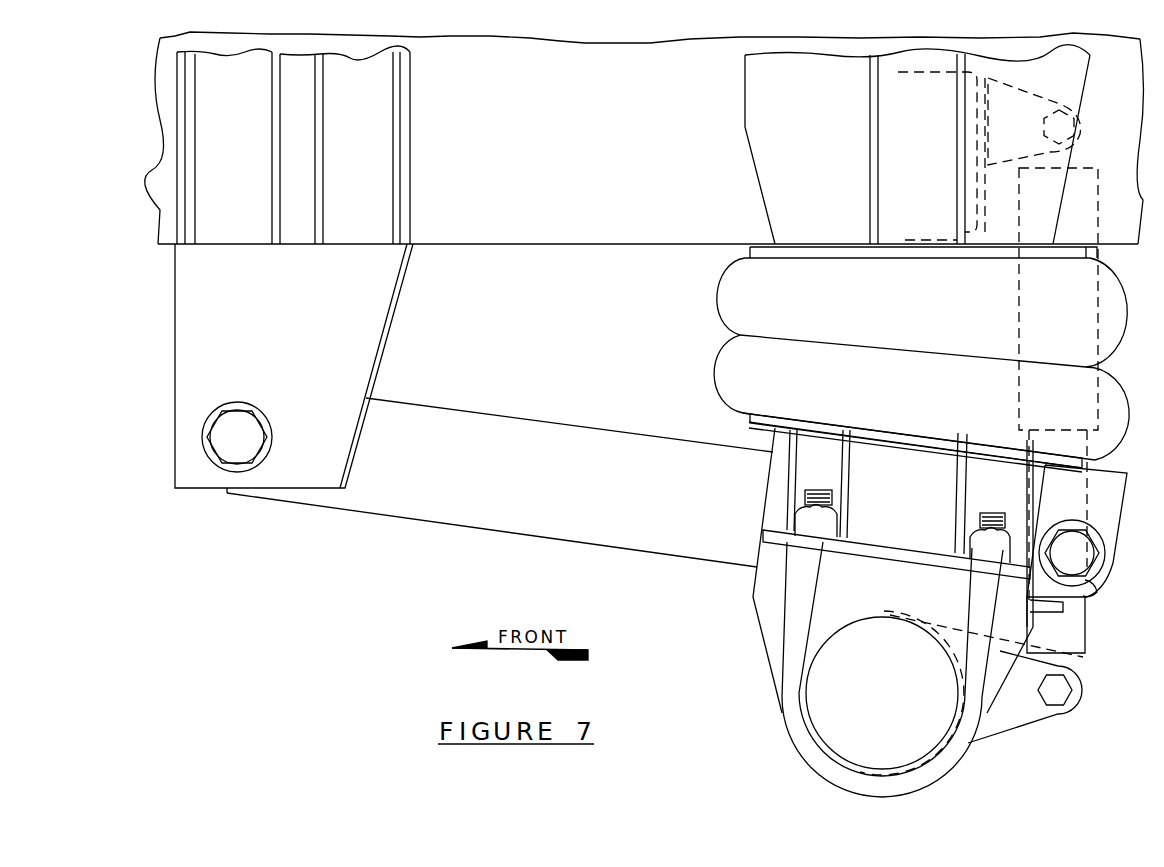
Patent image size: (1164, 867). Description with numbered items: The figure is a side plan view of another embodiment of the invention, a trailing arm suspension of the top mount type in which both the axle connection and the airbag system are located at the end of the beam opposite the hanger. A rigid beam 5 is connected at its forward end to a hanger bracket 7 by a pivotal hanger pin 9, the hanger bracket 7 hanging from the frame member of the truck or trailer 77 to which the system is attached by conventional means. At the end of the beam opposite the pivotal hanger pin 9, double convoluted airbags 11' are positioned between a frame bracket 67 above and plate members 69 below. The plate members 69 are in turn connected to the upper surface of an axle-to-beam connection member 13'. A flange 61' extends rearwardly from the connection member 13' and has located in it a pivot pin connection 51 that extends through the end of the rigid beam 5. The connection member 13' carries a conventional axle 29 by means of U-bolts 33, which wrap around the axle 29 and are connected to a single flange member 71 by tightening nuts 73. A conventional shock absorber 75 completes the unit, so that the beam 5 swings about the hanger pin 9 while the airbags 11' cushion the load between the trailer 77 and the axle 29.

The trailer 77 is at (590, 169).
The frame bracket 67 is at (1050, 190).
The shock absorber 75 is at (1083, 213).
The hanger bracket 7 is at (382, 318).
The pivotal hanger pin 9 is at (222, 443).
The rigid beam 5 is at (507, 513).
The double convoluted airbags 11' is at (934, 353).
The plate members 69 is at (1110, 458).
The axle-to-beam connection member 13' is at (890, 585).
The single flange member 71 is at (925, 527).
The nuts 73 is at (813, 522).
The U-bolts 33 is at (798, 728).
The axle 29 is at (930, 733).
The flange 61' is at (1089, 559).
The pivot pin connection 51 is at (1097, 590).